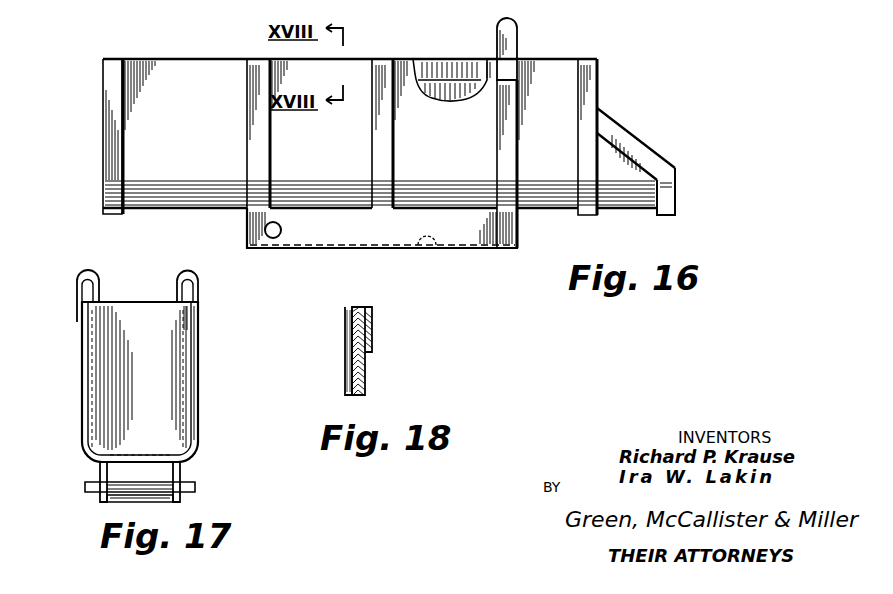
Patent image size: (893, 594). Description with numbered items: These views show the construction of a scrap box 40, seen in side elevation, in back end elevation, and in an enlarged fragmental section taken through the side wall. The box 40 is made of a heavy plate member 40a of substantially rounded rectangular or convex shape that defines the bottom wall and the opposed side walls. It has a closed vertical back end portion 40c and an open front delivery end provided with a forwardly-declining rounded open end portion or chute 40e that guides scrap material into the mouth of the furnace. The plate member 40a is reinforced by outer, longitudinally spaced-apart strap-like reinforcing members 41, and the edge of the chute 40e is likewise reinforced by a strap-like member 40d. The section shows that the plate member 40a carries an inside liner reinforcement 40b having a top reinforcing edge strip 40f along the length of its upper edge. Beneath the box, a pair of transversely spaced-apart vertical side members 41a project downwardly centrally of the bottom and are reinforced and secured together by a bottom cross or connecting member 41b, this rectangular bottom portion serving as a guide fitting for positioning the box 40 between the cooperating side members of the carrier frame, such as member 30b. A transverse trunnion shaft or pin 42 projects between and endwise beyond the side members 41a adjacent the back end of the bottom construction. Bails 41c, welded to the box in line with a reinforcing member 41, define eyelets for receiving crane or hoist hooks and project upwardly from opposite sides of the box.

In FIG. 16, the support member 30b is at (389, 6).
In FIG. 16, the scrap box 40 is at (147, 59).
In FIG. 16, the plate member 40a is at (213, 72).
In FIG. 18, the plate member 40a is at (350, 372).
In FIG. 16, the inside liner reinforcement 40b is at (424, 80).
In FIG. 18, the inside liner reinforcement 40b is at (366, 370).
In FIG. 16, the back end portion 40c is at (103, 73).
In FIG. 17, the back end portion 40c is at (100, 356).
In FIG. 16, the strap-like member 40d is at (630, 133).
In FIG. 16, the chute 40e is at (677, 186).
In FIG. 16, the top reinforcing edge strip 40f is at (470, 72).
In FIG. 17, the top reinforcing edge strip 40f is at (181, 306).
In FIG. 18, the top reinforcing edge strip 40f is at (373, 326).
In FIG. 16, the reinforcing strap-like members 41 is at (103, 143).
In FIG. 17, the reinforcing strap-like members 41 is at (198, 365).
In FIG. 18, the reinforcing strap-like members 41 is at (346, 330).
In FIG. 16, the vertical side members 41a is at (498, 250).
In FIG. 17, the vertical side members 41a is at (100, 462).
In FIG. 16, the bottom cross member 41b is at (416, 249).
In FIG. 17, the bottom cross member 41b is at (112, 502).
In FIG. 16, the bails 41c is at (517, 32).
In FIG. 17, the bails 41c is at (100, 268).
In FIG. 16, the trunnion shaft 42 is at (282, 240).
In FIG. 17, the trunnion shaft 42 is at (85, 487).